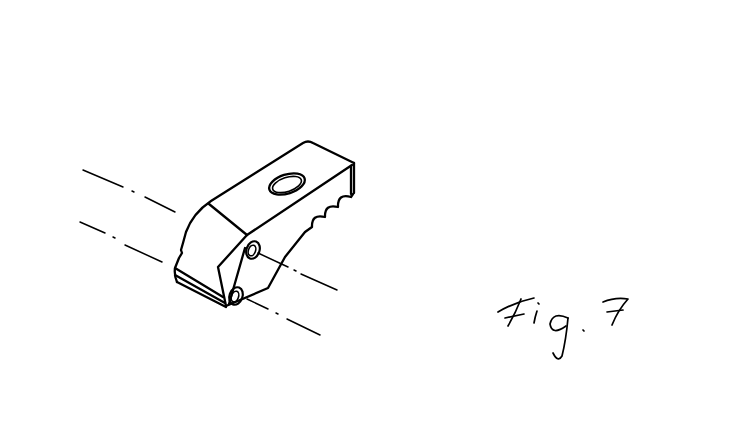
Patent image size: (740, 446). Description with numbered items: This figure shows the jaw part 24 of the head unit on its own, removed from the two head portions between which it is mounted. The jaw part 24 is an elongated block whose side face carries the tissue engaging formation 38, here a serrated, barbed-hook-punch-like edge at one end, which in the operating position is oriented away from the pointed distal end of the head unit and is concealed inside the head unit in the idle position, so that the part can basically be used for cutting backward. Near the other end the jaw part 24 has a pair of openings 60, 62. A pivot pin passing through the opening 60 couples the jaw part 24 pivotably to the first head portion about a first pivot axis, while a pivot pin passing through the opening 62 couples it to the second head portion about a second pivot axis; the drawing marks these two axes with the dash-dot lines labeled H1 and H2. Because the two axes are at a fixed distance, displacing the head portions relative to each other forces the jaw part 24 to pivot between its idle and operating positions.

The jaw part 24 is at (323, 147).
The tissue engaging formation 38 is at (337, 223).
The opening 62 is at (249, 242).
The opening 60 is at (233, 310).
The lower hole axis H1 is at (310, 365).
The upper hole axis H2 is at (335, 288).